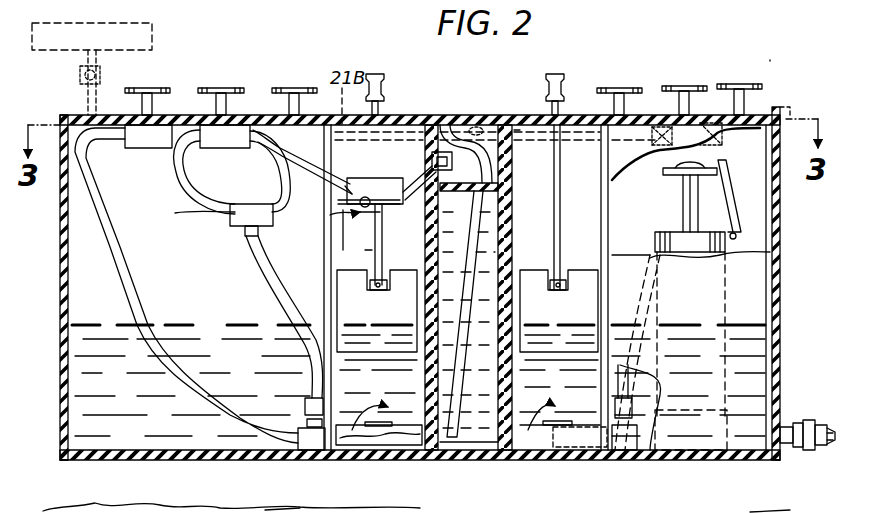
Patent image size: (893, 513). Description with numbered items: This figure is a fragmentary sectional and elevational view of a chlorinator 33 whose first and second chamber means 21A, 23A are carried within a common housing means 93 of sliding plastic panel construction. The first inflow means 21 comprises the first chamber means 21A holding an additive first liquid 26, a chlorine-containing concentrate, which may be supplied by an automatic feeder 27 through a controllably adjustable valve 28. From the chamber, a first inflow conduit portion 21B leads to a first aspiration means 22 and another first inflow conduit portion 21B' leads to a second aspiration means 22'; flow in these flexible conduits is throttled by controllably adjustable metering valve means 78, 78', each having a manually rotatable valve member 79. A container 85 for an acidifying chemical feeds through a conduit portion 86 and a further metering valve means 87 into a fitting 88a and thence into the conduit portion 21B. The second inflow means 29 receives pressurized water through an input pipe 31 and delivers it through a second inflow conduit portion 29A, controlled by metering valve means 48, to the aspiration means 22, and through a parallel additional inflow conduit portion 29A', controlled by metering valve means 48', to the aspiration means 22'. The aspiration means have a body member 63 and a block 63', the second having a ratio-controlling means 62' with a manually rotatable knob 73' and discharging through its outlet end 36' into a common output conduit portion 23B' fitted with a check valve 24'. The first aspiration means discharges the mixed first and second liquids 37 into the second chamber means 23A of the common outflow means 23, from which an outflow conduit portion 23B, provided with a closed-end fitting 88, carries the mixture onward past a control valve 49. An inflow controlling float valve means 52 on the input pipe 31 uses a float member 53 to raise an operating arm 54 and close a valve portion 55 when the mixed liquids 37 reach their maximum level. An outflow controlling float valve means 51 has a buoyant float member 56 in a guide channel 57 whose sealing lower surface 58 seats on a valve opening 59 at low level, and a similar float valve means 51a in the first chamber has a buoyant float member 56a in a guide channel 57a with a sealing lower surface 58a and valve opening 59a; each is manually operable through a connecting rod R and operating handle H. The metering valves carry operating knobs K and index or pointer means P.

The first inflow means 21 is at (150, 163).
The first chamber means 21A is at (60, 290).
The first inflow conduit portion 21B is at (248, 261).
The first inflow conduit portion 21B' is at (277, 196).
The aspiration means 22 is at (231, 494).
The second aspiration means 22' is at (349, 232).
The common outflow means 23 is at (763, 458).
The second chamber means 23A is at (770, 370).
The outflow conduit portion 23B is at (560, 235).
The common output conduit portion 23B' is at (414, 176).
The check valve 24' is at (469, 303).
The additive first liquid 26 is at (203, 352).
The automatic feeder 27 is at (158, 40).
The controllably adjustable valve 28 is at (80, 75).
The second inflow means 29 is at (795, 418).
The second inflow conduit portion 29A is at (803, 105).
The additional inflow conduit portion 29A' is at (508, 167).
The input pipe 31 is at (830, 446).
The chlorinator 33 is at (782, 60).
The outlet end 36' is at (389, 216).
The mixed first and second liquids 37 is at (740, 326).
The controllably adjustable metering valve means 48 is at (743, 66).
The controllably adjustable metering valve means 48' is at (684, 66).
The control valve 49 is at (618, 60).
The outflow-controlling float valve means 51 is at (552, 364).
The outflow-controlling float valve means 51a is at (388, 362).
The inflow-controlling float valve means 52 is at (755, 226).
The float member 53 is at (660, 248).
The operating arm 54 is at (722, 196).
The valve portion 55 is at (672, 170).
The buoyant float member 56 is at (580, 278).
The buoyant float member 56a is at (404, 286).
The guide channel 57 is at (596, 190).
The guide channel 57a is at (350, 256).
The sealing lower surface 58 is at (582, 350).
The sealing lower surface 58a is at (400, 354).
The valve opening 59 is at (566, 425).
The valve opening 59a is at (368, 424).
The ratio-controlling means 62' is at (356, 244).
The body member 63 is at (280, 497).
The block 63' is at (323, 201).
The manually rotatable knob 73' is at (370, 192).
The controllably adjustable metering valve means 78 is at (301, 72).
The controllably adjustable metering valve means 78' is at (242, 74).
The manually rotatable valve member 79 is at (272, 139).
The container 85 is at (518, 170).
The conduit portion 86 is at (106, 249).
The controllably adjustable metering valve means 87 is at (148, 83).
The fitting 88 is at (636, 450).
The fitting 88a is at (302, 432).
The common housing means 93 is at (66, 466).
The operating handle H is at (380, 72).
The index or pointer means P is at (130, 90).
The operating knob K is at (170, 90).
The connecting rod R is at (380, 104).